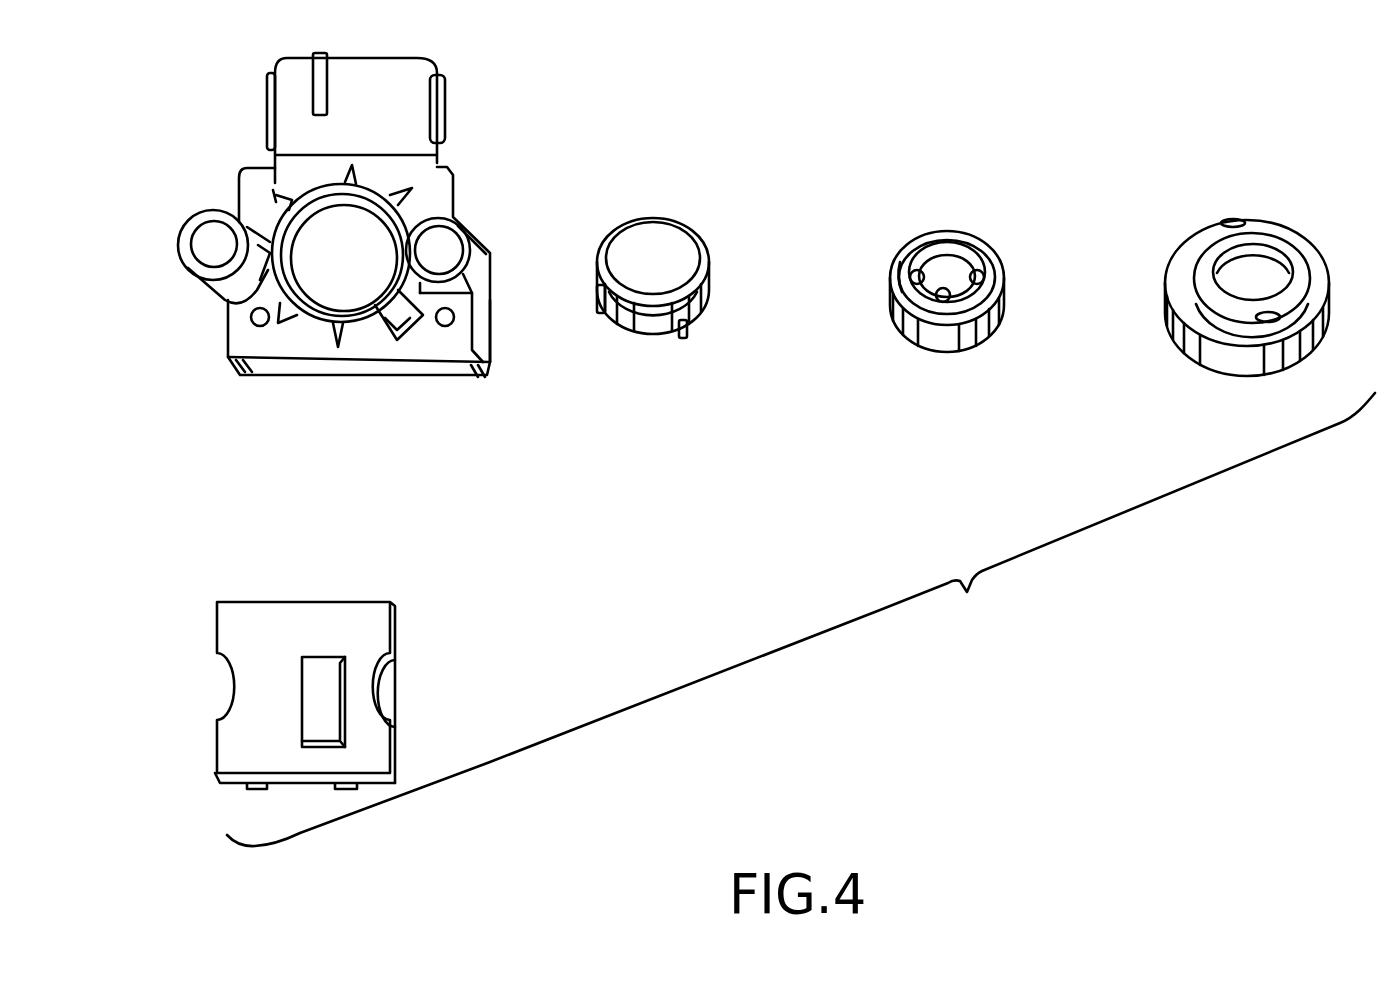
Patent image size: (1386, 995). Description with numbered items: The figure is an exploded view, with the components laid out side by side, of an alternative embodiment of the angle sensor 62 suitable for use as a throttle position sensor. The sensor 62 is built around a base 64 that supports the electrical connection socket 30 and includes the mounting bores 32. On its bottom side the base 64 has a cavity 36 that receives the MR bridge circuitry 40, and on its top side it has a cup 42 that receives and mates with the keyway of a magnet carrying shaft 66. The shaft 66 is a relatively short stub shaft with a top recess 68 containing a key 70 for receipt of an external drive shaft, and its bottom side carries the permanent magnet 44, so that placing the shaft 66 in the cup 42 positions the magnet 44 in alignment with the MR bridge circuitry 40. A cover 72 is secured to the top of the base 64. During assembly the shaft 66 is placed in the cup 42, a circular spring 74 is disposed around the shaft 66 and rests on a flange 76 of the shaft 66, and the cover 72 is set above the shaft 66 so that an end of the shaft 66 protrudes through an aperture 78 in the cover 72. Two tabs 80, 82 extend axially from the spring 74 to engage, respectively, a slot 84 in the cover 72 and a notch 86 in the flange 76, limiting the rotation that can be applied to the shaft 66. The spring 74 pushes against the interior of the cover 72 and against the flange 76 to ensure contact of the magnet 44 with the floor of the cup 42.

The electrical connection socket 30 is at (440, 76).
The mounting bores 32 is at (463, 237).
The cavity 36 is at (313, 372).
The MR bridge circuitry 40 is at (335, 727).
The cup 42 is at (293, 278).
The permanent magnet 44 is at (890, 268).
The sensor 62 is at (801, 619).
The base 64 is at (492, 313).
The magnet carrying shaft 66 is at (952, 232).
The top recess 68 is at (942, 293).
The key 70 is at (977, 293).
The cover 72 is at (1295, 230).
The circular spring 74 is at (700, 248).
The flange 76 is at (888, 293).
The aperture 78 is at (1257, 298).
The tab 80 is at (600, 312).
The tab 82 is at (684, 340).
The slot 84 is at (1263, 370).
The notch 86 is at (910, 318).